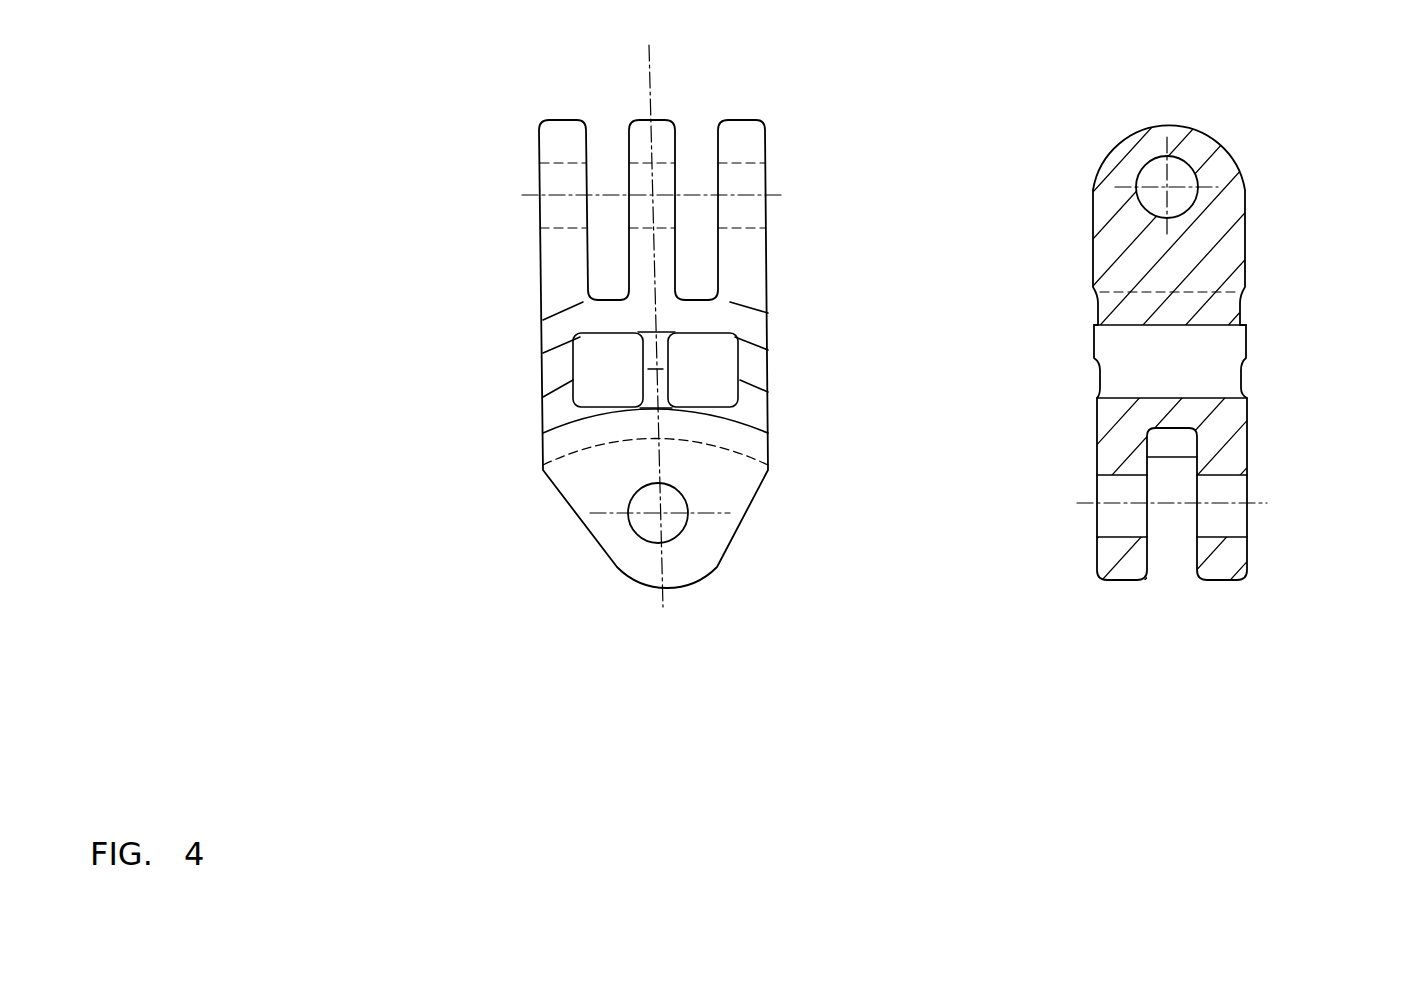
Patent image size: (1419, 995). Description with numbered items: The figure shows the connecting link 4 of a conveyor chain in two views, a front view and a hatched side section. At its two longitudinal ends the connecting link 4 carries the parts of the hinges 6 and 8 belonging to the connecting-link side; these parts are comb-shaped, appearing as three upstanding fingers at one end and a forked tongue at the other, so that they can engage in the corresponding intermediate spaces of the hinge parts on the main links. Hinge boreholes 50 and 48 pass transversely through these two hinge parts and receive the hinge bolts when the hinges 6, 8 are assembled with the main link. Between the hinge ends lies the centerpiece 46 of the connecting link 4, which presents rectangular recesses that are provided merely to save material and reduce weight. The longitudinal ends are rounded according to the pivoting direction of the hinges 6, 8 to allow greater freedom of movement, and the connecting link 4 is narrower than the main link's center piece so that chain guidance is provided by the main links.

The connecting link 4 is at (458, 327).
The hinge 6 is at (1078, 157).
The hinge 8 is at (1073, 490).
The centerpiece 46 is at (775, 367).
The hinge borehole 48 is at (650, 528).
The hinge borehole 50 is at (562, 185).